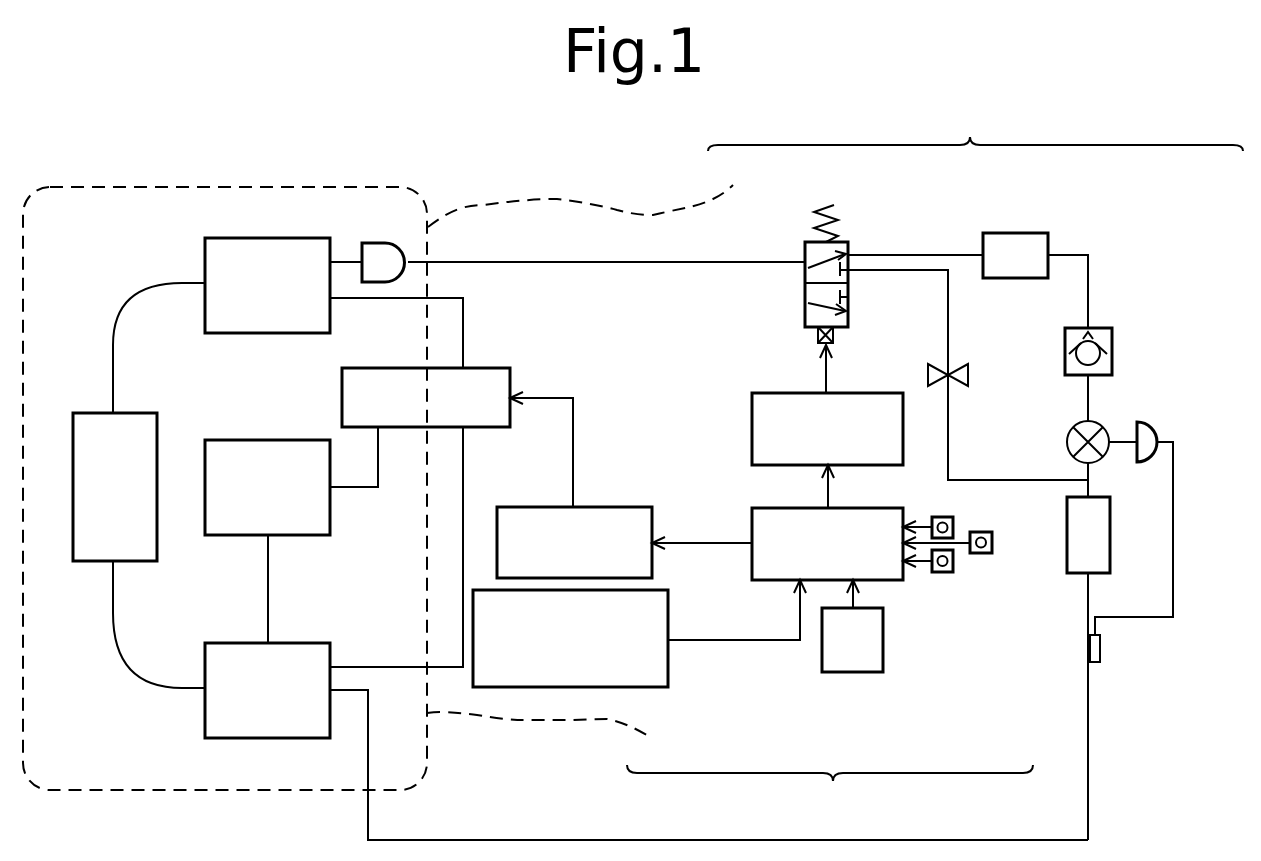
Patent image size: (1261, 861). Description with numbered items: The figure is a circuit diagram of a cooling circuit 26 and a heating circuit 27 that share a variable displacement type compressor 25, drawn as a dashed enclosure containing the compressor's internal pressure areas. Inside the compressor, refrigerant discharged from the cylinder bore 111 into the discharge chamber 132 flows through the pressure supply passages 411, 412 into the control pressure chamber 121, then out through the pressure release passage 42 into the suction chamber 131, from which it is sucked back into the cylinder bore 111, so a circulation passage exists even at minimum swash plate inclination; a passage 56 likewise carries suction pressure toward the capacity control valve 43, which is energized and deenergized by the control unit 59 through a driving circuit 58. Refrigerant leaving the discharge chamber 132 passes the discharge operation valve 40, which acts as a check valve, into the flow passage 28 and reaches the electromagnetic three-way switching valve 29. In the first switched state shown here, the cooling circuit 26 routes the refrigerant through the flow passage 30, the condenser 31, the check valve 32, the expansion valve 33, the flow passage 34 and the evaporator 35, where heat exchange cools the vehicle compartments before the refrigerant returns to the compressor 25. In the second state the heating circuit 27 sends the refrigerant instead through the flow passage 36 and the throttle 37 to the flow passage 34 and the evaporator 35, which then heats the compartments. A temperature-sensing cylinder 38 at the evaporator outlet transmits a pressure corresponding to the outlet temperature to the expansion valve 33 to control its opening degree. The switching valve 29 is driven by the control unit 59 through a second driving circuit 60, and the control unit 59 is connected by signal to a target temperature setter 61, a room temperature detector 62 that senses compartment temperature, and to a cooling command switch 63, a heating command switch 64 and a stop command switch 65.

The variable displacement type compressor 25 is at (386, 472).
The cooling circuit 26 is at (975, 128).
The heating circuit 27 is at (830, 790).
The flow passage 28 is at (770, 262).
The electromagnetic three-way switching valve 29 is at (848, 240).
The flow passage 30 is at (900, 255).
The condenser 31 is at (1013, 233).
The check valve 32 is at (1103, 328).
The expansion valve 33 is at (1105, 424).
The flow passage 34 is at (1090, 603).
The evaporator 35 is at (1112, 505).
The flow passage 36 is at (1038, 480).
The throttle 37 is at (960, 388).
The temperature-sensing cylinder 38 is at (1101, 645).
The discharge operation valve 40 is at (393, 243).
The pressure release passage 42 is at (268, 596).
The capacity control valve 43 is at (477, 367).
The passage 56 is at (463, 620).
The driving circuit 58 is at (612, 507).
The control unit 59 is at (773, 580).
The driving circuit 60 is at (870, 393).
The target temperature setter 61 is at (668, 605).
The room temperature detector 62 is at (822, 662).
The cooling command switch 63 is at (935, 517).
The heating command switch 64 is at (940, 573).
The stop command switch 65 is at (980, 532).
The cylinder bore 111 is at (139, 497).
The control pressure chamber 121 is at (295, 497).
The suction chamber 131 is at (295, 699).
The discharge chamber 132 is at (295, 295).
The pressure supply passage 411 is at (463, 312).
The pressure supply passage 412 is at (365, 492).